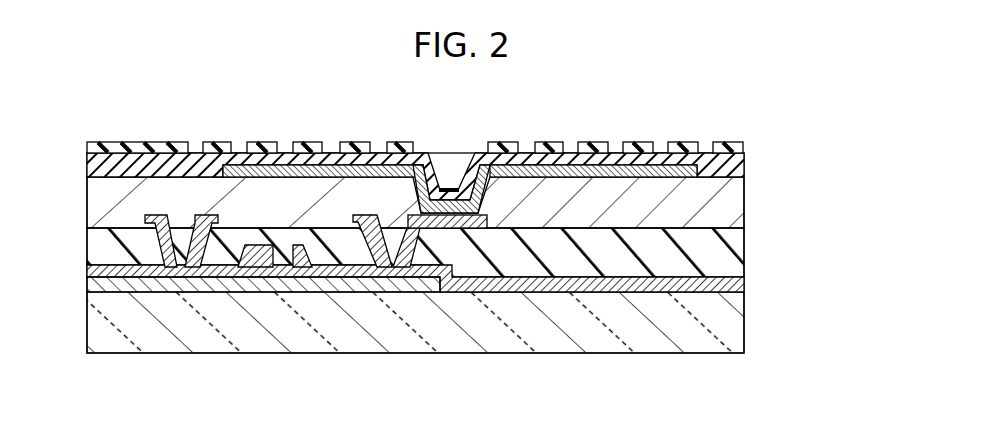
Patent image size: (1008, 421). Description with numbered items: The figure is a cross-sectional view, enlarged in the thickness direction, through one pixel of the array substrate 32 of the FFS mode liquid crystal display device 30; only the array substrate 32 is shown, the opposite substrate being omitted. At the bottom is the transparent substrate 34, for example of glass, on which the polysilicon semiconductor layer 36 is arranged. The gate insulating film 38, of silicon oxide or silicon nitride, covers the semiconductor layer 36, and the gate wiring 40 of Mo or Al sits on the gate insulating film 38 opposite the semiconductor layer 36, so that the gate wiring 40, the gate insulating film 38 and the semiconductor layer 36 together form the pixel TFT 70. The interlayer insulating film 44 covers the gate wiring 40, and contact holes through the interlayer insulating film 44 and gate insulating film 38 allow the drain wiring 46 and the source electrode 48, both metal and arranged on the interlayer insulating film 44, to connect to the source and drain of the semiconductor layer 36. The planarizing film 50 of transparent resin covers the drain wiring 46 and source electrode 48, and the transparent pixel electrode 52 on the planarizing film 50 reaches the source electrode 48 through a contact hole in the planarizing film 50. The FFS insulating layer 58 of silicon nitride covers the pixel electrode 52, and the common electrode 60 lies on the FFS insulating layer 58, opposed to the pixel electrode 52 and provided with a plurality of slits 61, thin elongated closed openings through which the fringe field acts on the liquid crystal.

The FFS mode liquid crystal display device 30 is at (471, 253).
The array substrate 32 is at (762, 311).
The transparent substrate 34 is at (618, 325).
The semiconductor layer 36 is at (347, 283).
The gate insulating film 38 is at (286, 278).
The gate wiring 40 is at (245, 262).
The interlayer insulating film 44 is at (688, 262).
The drain wiring 46 is at (180, 270).
The source electrode 48 is at (468, 215).
The planarizing film 50 is at (560, 205).
The pixel electrode 52 is at (660, 173).
The FFS insulating layer 58 is at (737, 162).
The common electrode 60 is at (730, 142).
The slits 61 is at (378, 136).
The pixel TFT 70 is at (263, 298).